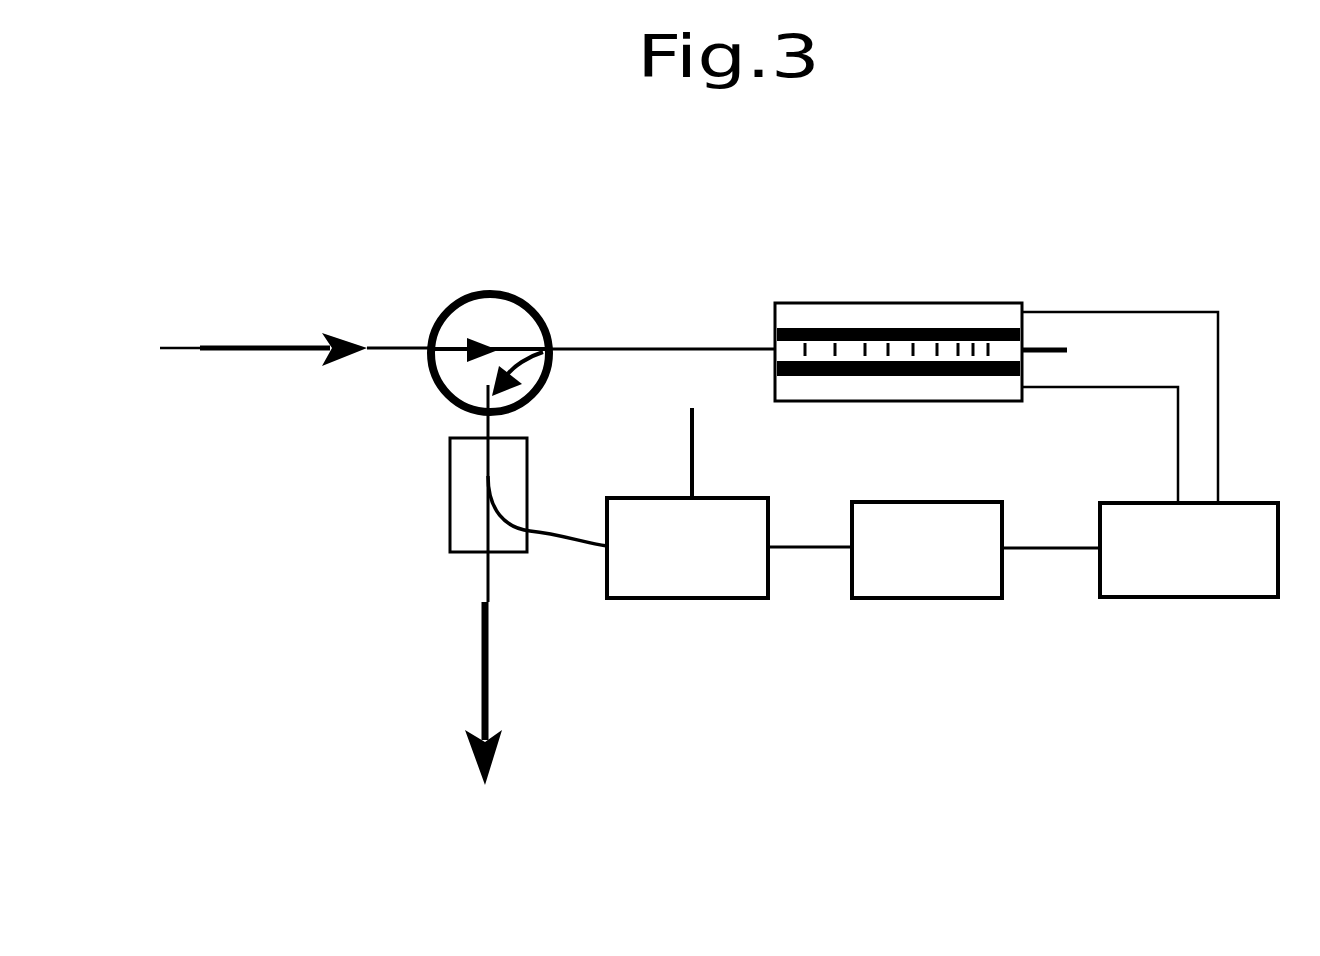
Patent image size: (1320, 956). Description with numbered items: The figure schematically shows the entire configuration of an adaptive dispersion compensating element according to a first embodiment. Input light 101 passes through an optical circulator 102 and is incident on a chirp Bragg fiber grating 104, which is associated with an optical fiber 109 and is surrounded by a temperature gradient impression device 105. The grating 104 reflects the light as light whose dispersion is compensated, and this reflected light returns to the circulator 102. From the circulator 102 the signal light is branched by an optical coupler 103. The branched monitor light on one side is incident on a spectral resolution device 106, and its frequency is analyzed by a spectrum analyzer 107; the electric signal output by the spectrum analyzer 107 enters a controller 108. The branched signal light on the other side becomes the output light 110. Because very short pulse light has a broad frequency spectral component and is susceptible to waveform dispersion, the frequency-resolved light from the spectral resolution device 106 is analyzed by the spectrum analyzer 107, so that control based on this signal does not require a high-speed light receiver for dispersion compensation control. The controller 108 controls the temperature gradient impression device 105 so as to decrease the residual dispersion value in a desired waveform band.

The input light 101 is at (319, 334).
The optical circulator 102 is at (460, 300).
The optical coupler 103 is at (449, 513).
The chirp Bragg fiber grating 104 is at (942, 326).
The temperature gradient impression device 105 is at (855, 303).
The spectral resolution device 106 is at (687, 598).
The spectrum analyzer 107 is at (885, 598).
The controller 108 is at (1138, 597).
The optical fiber 109 is at (1067, 350).
The output light 110 is at (482, 680).